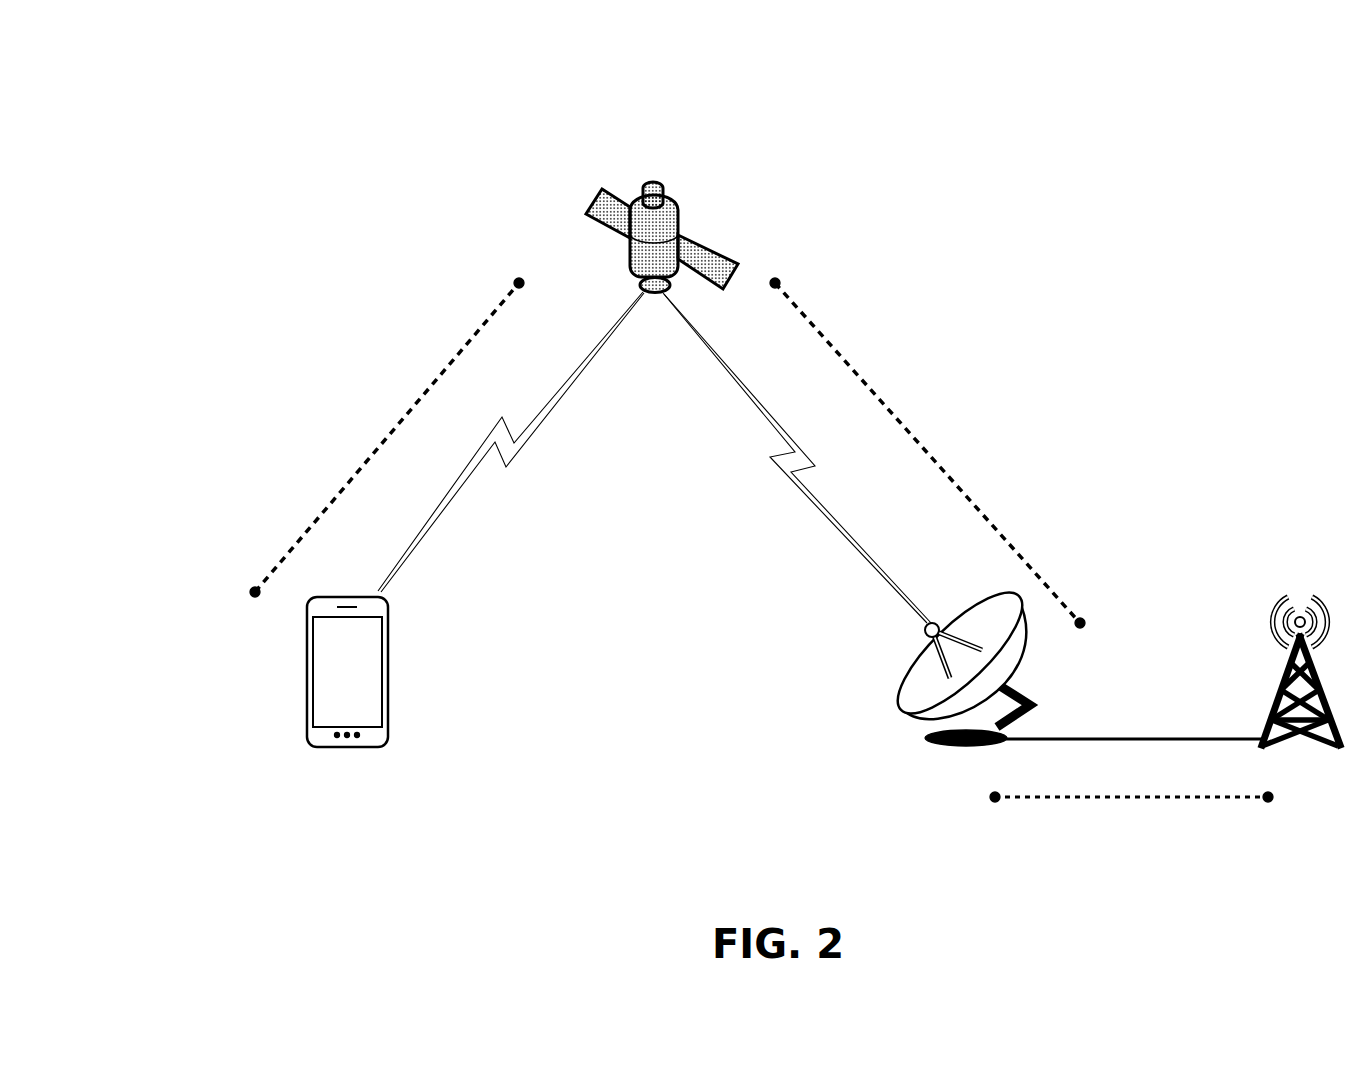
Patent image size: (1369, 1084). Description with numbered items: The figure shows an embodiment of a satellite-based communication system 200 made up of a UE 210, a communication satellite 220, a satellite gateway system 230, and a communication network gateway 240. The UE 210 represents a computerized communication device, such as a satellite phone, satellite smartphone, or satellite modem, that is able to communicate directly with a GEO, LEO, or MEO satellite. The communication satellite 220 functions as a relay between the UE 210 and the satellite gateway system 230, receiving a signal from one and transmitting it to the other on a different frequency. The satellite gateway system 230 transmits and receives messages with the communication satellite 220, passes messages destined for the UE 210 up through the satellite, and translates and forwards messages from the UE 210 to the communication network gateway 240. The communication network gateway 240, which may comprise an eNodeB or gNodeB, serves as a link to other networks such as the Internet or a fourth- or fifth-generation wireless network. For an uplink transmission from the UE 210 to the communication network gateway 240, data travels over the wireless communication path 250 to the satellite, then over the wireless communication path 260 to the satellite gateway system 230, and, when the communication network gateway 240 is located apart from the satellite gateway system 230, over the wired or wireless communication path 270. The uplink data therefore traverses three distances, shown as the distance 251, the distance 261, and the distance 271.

The satellite-based communication system 200 is at (199, 95).
The UE 210 is at (347, 672).
The communication satellite 220 is at (600, 193).
The satellite gateway system 230 is at (904, 699).
The communication network gateway 240 is at (1278, 710).
The wireless communication path 250 is at (478, 469).
The distance 251 is at (460, 351).
The wireless communication path 260 is at (786, 476).
The distance 261 is at (927, 452).
The communication path 270 is at (1170, 738).
The distance 271 is at (1128, 798).